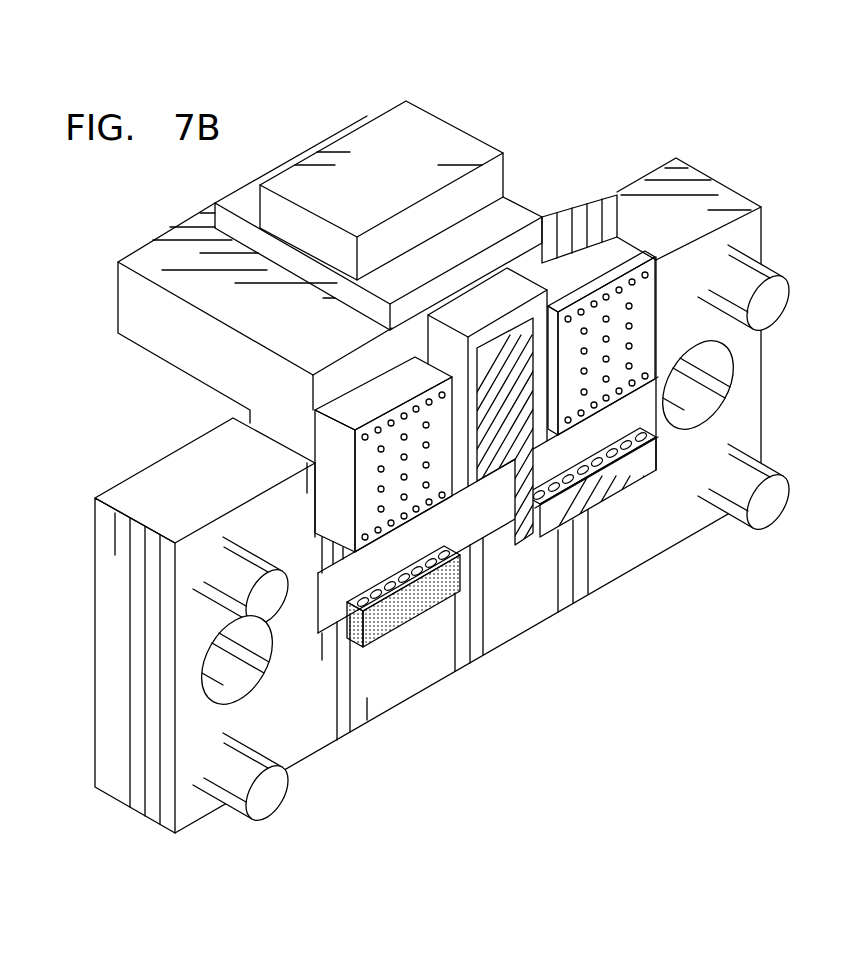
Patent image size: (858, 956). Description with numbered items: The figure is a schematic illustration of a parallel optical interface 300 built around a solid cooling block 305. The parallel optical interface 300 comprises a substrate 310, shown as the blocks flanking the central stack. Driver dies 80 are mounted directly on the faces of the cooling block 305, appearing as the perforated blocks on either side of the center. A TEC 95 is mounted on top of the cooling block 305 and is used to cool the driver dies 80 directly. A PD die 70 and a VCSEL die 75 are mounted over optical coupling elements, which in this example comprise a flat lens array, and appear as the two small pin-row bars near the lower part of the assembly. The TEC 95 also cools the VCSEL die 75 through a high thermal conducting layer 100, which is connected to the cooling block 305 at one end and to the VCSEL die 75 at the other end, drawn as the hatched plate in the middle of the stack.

The parallel optical interface 300 is at (712, 87).
The substrate 310 is at (718, 203).
The solid cooling block 305 is at (520, 285).
The TEC 95 is at (507, 223).
The driver dies 80 is at (380, 400).
The high thermal conducting layer 100 is at (500, 430).
The VCSEL die 75 is at (655, 472).
The PD die 70 is at (417, 605).